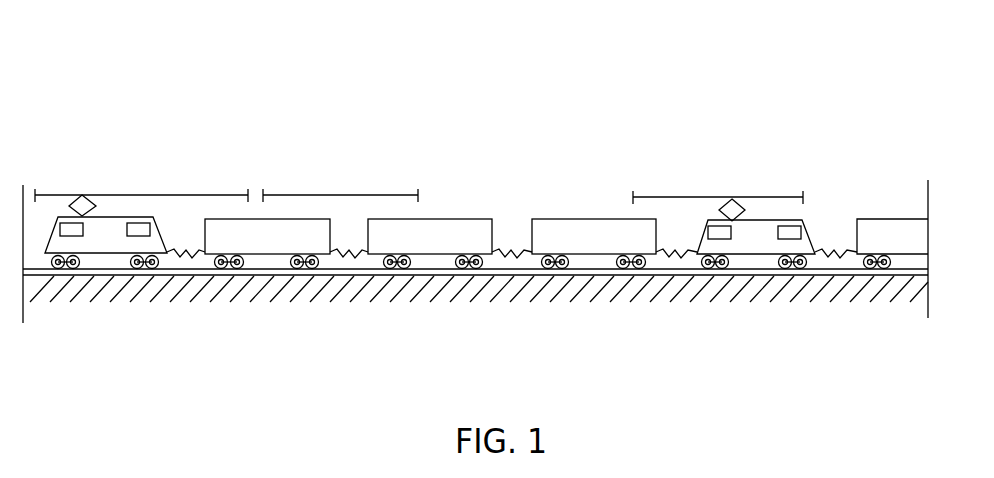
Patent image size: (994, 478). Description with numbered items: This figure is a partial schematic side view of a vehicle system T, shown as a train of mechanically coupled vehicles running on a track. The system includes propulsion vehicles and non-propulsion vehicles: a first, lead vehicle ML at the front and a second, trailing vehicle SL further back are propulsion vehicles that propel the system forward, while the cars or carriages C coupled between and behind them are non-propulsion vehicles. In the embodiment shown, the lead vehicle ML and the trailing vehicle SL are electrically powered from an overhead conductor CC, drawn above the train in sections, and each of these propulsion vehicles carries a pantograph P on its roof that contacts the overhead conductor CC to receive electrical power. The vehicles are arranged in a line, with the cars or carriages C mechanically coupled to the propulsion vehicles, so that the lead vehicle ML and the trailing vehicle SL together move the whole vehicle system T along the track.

The train T is at (330, 167).
The master locomotive ML is at (105, 238).
The slave locomotive SL is at (752, 242).
The cars or carriages C is at (268, 243).
The pantograph P is at (92, 197).
The overhead conductor CC is at (295, 195).